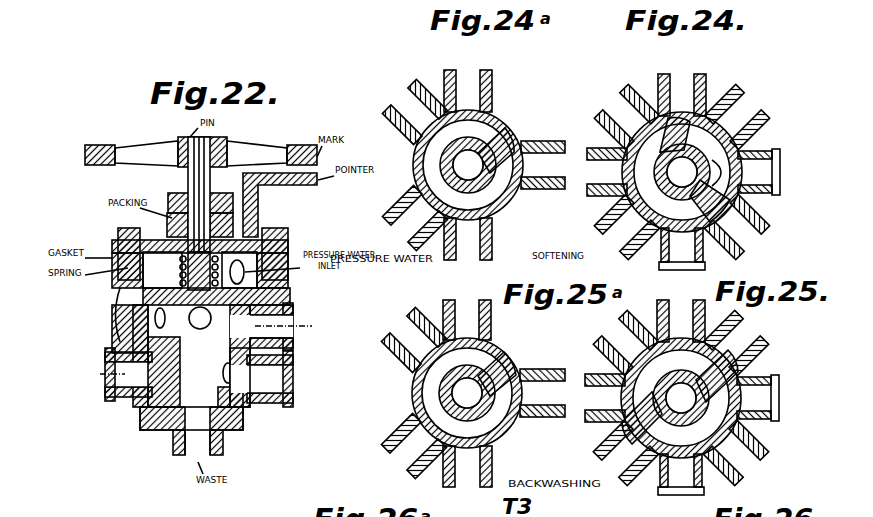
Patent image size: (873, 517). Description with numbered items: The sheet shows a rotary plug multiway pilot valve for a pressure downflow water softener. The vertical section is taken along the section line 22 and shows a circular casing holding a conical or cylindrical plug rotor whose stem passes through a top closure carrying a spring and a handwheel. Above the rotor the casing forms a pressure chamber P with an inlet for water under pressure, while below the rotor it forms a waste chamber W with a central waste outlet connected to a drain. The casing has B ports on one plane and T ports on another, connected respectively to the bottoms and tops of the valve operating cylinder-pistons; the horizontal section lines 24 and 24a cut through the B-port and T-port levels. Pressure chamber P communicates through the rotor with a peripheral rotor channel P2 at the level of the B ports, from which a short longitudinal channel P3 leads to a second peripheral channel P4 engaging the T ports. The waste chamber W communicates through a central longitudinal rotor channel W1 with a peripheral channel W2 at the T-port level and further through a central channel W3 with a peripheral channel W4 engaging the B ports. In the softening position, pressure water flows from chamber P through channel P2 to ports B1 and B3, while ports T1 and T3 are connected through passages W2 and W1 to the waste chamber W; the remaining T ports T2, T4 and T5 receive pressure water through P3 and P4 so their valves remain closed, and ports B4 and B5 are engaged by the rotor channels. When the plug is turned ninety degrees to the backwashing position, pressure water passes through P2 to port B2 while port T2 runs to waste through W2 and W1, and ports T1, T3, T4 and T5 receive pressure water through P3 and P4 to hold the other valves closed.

In FIG. 22, the pressure chamber P is at (162, 270).
In FIG. 22, the B port B4 is at (262, 280).
In FIG. 24, the B port B4 is at (600, 190).
In FIG. 25, the B port B4 is at (605, 398).
In FIG. 22, the B port B5 is at (122, 305).
In FIG. 24, the B port B5 is at (620, 230).
In FIG. 25, the B port B5 is at (616, 431).
In FIG. 22, the peripheral rotor channel P2 is at (275, 312).
In FIG. 24, the peripheral rotor channel P2 is at (692, 170).
In FIG. 25, the peripheral rotor channel P2 is at (722, 416).
In FIG. 22, the B port B1 is at (300, 320).
In FIG. 24, the B port B1 is at (694, 79).
In FIG. 25, the B port B1 is at (682, 312).
In FIG. 22, the section line 24— 24 is at (312, 320).
In FIG. 22, the peripheral channel W4 is at (126, 340).
In FIG. 24, the peripheral channel W4 is at (682, 172).
In FIG. 25, the peripheral channel W4 is at (681, 398).
In FIG. 22, the central channel W3 is at (202, 328).
In FIG. 24, the central channel W3 is at (682, 172).
In FIG. 25, the central channel W3 is at (681, 398).
In FIG. 22, the peripheral channel W2 is at (292, 342).
In FIG. 24A, the peripheral channel W2 is at (468, 165).
In FIG. 25A, the peripheral channel W2 is at (499, 371).
In FIG. 22, the section line 24a— 24a is at (320, 378).
In FIG. 22, the T port T1 is at (224, 370).
In FIG. 24A, the T port T1 is at (413, 100).
In FIG. 24, the T port T1 is at (624, 100).
In FIG. 25A, the T port T1 is at (402, 326).
In FIG. 25, the T port T1 is at (622, 346).
In FIG. 22, the T port T5 is at (108, 378).
In FIG. 24A, the T port T5 is at (480, 240).
In FIG. 24, the T port T5 is at (664, 254).
In FIG. 25A, the T port T5 is at (475, 463).
In FIG. 25, the T port T5 is at (662, 480).
In FIG. 22, the T port T3 is at (290, 388).
In FIG. 24A, the T port T3 is at (480, 73).
In FIG. 25A, the T port T3 is at (476, 321).
In FIG. 22, the T port T4 is at (150, 392).
In FIG. 24A, the T port T4 is at (406, 210).
In FIG. 25A, the T port T4 is at (406, 446).
In FIG. 22, the peripheral channel P4 is at (158, 412).
In FIG. 24A, the peripheral channel P4 is at (497, 200).
In FIG. 25A, the peripheral channel P4 is at (426, 379).
In FIG. 22, the central longitudinal rotor channel W1 is at (245, 402).
In FIG. 24A, the central longitudinal rotor channel W1 is at (455, 166).
In FIG. 25A, the central longitudinal rotor channel W1 is at (467, 393).
In FIG. 22, the waste chamber W is at (236, 437).
In FIG. 24A, the section line 22— 22 is at (468, 272).
In FIG. 24, the section line 22— 22 is at (682, 276).
In FIG. 24A, the T port T2 is at (537, 158).
In FIG. 24, the T port T2 is at (777, 158).
In FIG. 25A, the T port T2 is at (542, 393).
In FIG. 25, the T port T2 is at (770, 390).
In FIG. 24, the B port B3 is at (740, 110).
In FIG. 25, the B port B3 is at (745, 346).
In FIG. 24, the B port B2 is at (745, 235).
In FIG. 25, the B port B2 is at (742, 456).
In FIG. 24, the longitudinal channel P3 is at (740, 172).
In FIG. 25, the longitudinal channel P3 is at (662, 399).